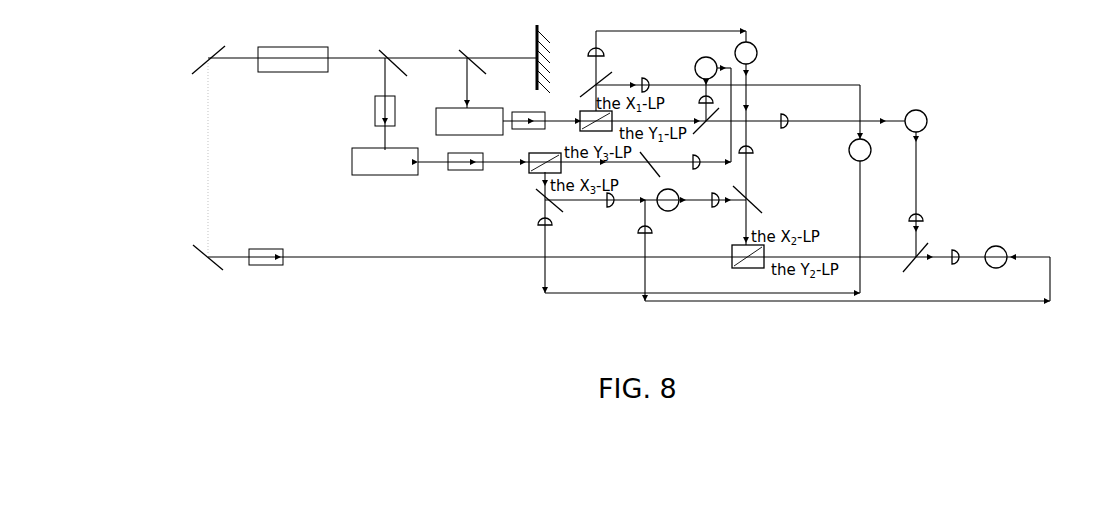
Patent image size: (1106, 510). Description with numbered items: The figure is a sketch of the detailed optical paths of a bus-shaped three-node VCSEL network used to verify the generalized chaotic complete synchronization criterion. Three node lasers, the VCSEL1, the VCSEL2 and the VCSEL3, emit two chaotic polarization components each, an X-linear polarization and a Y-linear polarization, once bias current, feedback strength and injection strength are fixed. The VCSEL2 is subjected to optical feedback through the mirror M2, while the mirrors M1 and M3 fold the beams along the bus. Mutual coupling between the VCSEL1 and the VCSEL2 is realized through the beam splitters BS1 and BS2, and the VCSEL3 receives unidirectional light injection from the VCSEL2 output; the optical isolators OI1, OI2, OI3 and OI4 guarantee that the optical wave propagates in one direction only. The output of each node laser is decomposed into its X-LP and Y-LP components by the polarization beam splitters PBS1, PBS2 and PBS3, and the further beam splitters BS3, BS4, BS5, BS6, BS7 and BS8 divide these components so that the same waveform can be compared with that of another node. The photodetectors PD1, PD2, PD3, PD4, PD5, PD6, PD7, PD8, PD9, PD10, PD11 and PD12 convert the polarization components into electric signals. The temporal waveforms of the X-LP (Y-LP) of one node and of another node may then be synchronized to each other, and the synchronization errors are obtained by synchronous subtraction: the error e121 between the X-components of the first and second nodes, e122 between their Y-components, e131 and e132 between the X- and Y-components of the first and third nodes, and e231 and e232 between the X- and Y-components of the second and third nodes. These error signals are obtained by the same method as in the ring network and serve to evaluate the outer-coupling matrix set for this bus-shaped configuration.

The mirror M1 is at (204, 57).
The mirror 2 M2 is at (537, 50).
The mirror M3 is at (204, 261).
The node- VCSEL1 is at (469, 121).
The node- VCSEL2 is at (293, 59).
The node- VCSEL3 is at (385, 161).
The beam splitter BS1 is at (395, 55).
The beam splitter BS2 is at (476, 54).
The beam splitter BS3 is at (587, 81).
The beam splitter BS4 is at (711, 126).
The beam splitter BS5 is at (657, 160).
The beam splitter BS6 is at (538, 200).
The beam splitter BS7 is at (756, 199).
The beam splitter BS8 is at (906, 257).
The polarization beam splitter PBS1 is at (583, 130).
The polarization beam splitter PBS2 is at (750, 270).
The polarization beam splitter PBS3 is at (527, 172).
The optical isolator OI1 is at (369, 111).
The optical isolator OI2 is at (266, 272).
The optical isolator OI3 is at (465, 174).
The optical isolator OI4 is at (529, 111).
The photodetector PD1 is at (583, 44).
The photodetector PD2 is at (659, 80).
The photodetector PD3 is at (694, 106).
The photodetector PD4 is at (779, 113).
The photodetector PD5 is at (529, 227).
The photodetector PD6 is at (609, 210).
The photodetector PD7 is at (701, 173).
The photodetector PD8 is at (632, 237).
The photodetector PD9 is at (721, 212).
The photodetector PD10 is at (761, 145).
The photodetector PD11 is at (950, 265).
The photodetector PD12 is at (932, 212).
The synchronization error e132(t) e132 is at (679, 62).
The synchronization error e121(t) e121 is at (774, 54).
The synchronization error e122(t) e122 is at (914, 111).
The synchronization error e131(t) e131 is at (833, 151).
The synchronization error e231(t) e231 is at (676, 207).
The synchronization error e232(t) e232 is at (995, 249).